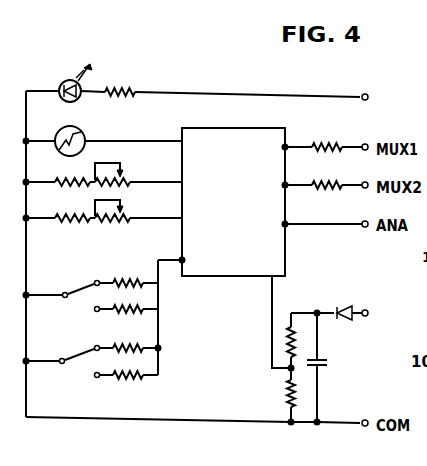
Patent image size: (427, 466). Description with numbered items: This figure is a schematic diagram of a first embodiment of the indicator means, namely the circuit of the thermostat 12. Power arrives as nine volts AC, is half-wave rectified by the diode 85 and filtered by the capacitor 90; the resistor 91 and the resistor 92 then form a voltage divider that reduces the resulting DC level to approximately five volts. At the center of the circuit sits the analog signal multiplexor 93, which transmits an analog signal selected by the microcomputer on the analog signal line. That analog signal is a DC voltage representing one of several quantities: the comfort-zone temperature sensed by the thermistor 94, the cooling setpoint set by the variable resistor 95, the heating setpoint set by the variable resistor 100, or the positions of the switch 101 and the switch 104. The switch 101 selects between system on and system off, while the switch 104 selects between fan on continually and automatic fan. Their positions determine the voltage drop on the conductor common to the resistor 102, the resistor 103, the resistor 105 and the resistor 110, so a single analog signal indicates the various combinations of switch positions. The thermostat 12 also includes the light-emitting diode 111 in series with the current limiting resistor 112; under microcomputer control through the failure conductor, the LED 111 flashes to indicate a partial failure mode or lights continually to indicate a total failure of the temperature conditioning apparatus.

The thermostat 12 is at (236, 90).
The diode 85 is at (343, 305).
The capacitor 90 is at (328, 363).
The resistor 91 is at (293, 351).
The resistor 92 is at (286, 389).
The analog signal multiplexor 93 is at (237, 210).
The thermistor 94 is at (104, 136).
The variable resistor 95 is at (104, 169).
The variable resistor 100 is at (104, 205).
The switch 101 is at (84, 286).
The resistor 102 is at (127, 280).
The resistor 103 is at (118, 312).
The switch 104 is at (90, 353).
The resistor 105 is at (125, 345).
The resistor 110 is at (123, 379).
The light-emitting diode 111 is at (61, 83).
The current limiting resistor 112 is at (130, 87).